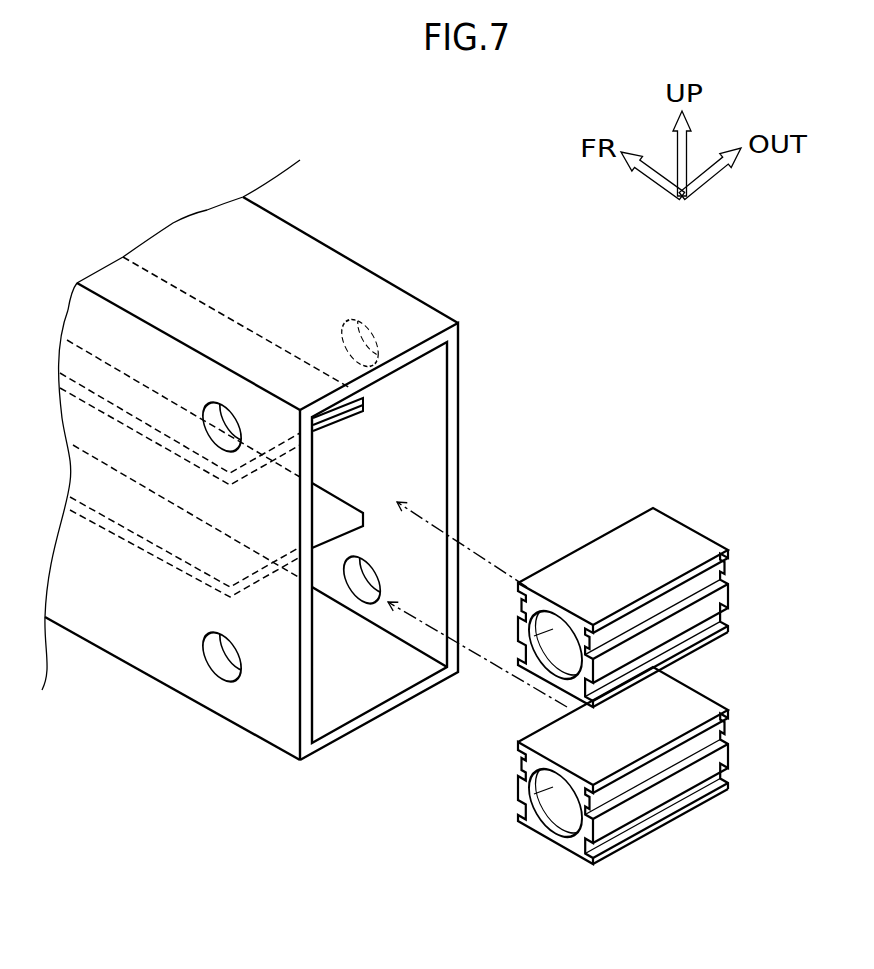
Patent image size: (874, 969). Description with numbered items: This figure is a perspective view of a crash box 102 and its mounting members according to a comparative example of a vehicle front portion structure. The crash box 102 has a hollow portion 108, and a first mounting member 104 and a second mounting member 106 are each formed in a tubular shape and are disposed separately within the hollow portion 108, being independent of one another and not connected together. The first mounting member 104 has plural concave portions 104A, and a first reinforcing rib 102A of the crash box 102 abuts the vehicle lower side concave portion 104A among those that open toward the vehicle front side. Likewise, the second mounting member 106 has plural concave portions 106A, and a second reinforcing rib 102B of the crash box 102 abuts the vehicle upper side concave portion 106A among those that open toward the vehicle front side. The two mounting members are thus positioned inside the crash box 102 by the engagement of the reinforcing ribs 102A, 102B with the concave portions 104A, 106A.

The crash box 102 is at (347, 232).
The first reinforcing rib 102A is at (364, 408).
The second reinforcing rib 102B is at (323, 548).
The first mounting member 104 is at (678, 503).
The concave portions 104A is at (524, 656).
The second mounting member 106 is at (707, 687).
The concave portions 106A is at (517, 762).
The hollow portion 108 is at (420, 486).